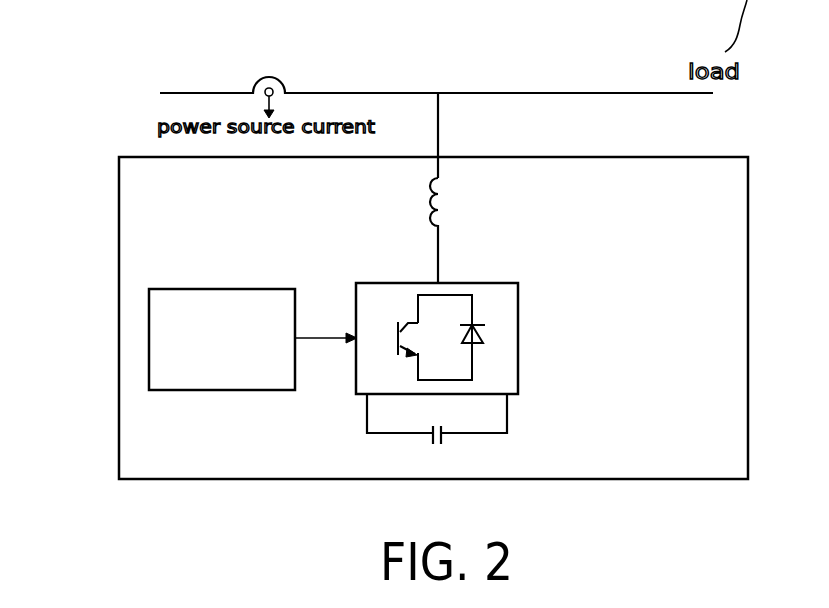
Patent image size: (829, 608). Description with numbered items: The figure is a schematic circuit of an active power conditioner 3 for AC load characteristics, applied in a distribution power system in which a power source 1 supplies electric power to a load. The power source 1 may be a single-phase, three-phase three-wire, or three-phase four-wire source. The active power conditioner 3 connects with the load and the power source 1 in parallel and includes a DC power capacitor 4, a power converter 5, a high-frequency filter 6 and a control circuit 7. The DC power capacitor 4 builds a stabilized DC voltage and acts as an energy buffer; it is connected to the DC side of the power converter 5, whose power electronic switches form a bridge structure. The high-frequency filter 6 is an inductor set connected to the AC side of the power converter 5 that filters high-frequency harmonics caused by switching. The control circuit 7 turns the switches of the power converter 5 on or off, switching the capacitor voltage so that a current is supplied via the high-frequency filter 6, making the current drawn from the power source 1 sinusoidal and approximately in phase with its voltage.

The power source 1 is at (110, 92).
The active power conditioner 3 is at (677, 479).
The DC power capacitor 4 is at (452, 442).
The power converter 5 is at (518, 311).
The high-frequency filter 6 is at (452, 208).
The control circuit 7 is at (217, 390).